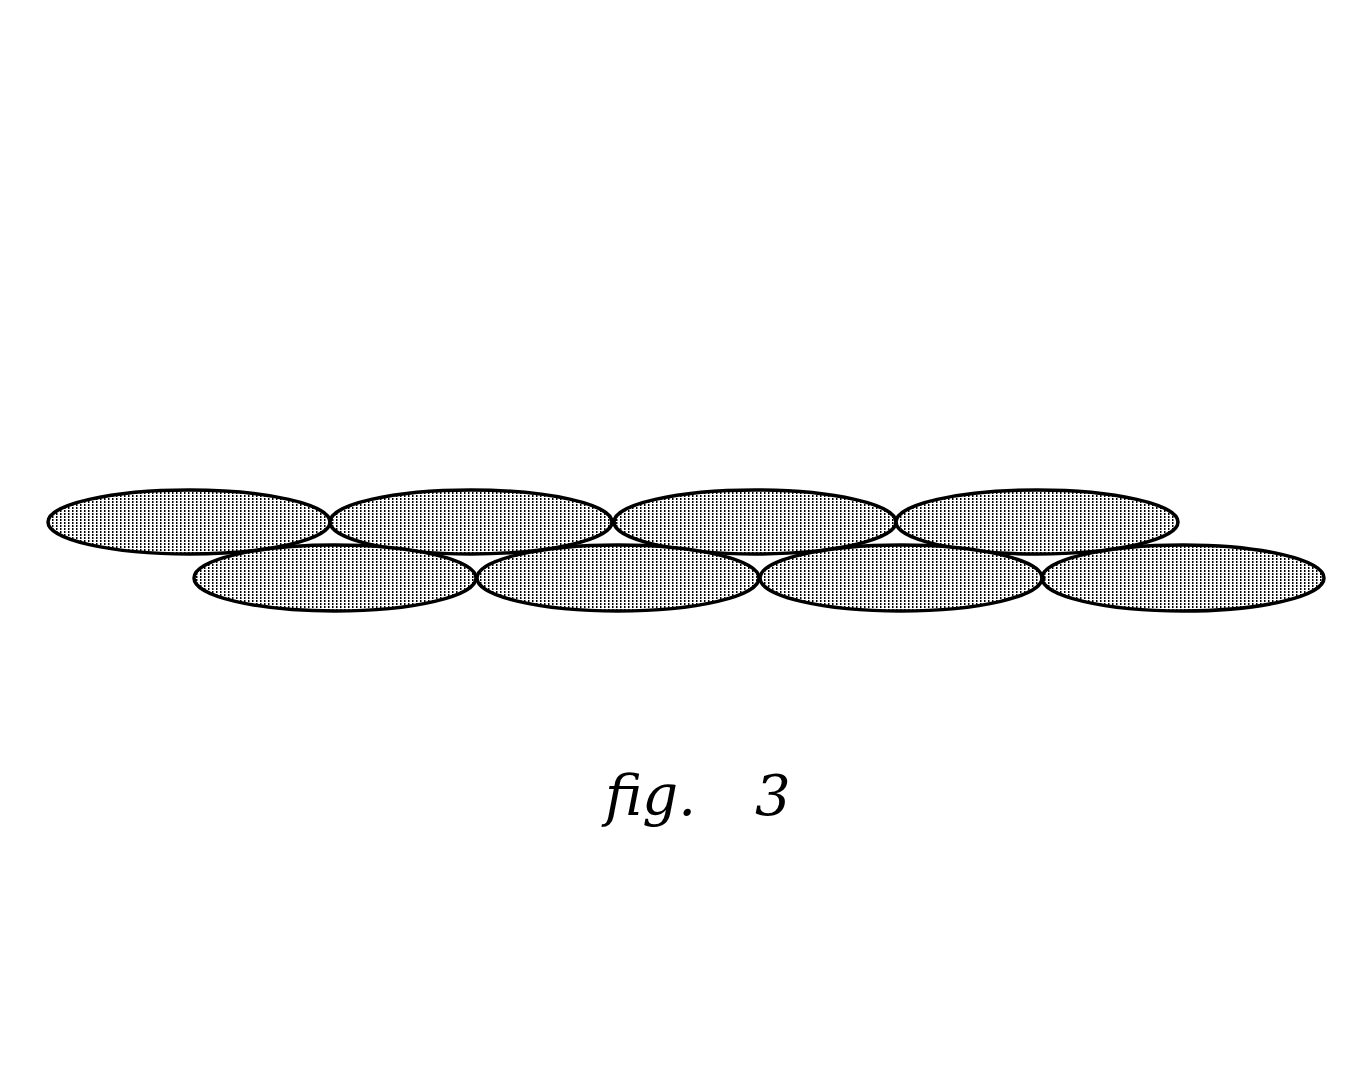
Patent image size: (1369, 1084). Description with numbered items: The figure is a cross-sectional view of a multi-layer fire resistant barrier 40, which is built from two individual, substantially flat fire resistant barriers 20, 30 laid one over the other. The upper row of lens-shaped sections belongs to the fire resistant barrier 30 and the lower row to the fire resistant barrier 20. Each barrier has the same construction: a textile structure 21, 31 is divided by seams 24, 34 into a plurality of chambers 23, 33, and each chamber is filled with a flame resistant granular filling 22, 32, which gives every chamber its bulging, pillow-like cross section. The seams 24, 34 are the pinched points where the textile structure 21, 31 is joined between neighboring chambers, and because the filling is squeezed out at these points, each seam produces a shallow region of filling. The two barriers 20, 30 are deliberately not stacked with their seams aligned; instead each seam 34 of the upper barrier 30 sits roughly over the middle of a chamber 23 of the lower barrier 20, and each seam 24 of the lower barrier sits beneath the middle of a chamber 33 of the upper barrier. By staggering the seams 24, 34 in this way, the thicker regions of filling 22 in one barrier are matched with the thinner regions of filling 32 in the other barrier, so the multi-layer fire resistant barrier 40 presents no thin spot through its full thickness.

The fire resistant barrier 20 is at (1240, 525).
The textile structure 21 is at (570, 610).
The flame resistant granular filling 22 is at (313, 593).
The chamber 23 is at (1020, 613).
The seam 24 is at (1043, 582).
The fire resistant barrier 30 is at (862, 458).
The textile structure 31 is at (752, 490).
The flame resistant granular filling 32 is at (1032, 508).
The chamber 33 is at (72, 472).
The seam 34 is at (613, 520).
The multi-layer fire resistant barrier 40 is at (1212, 320).